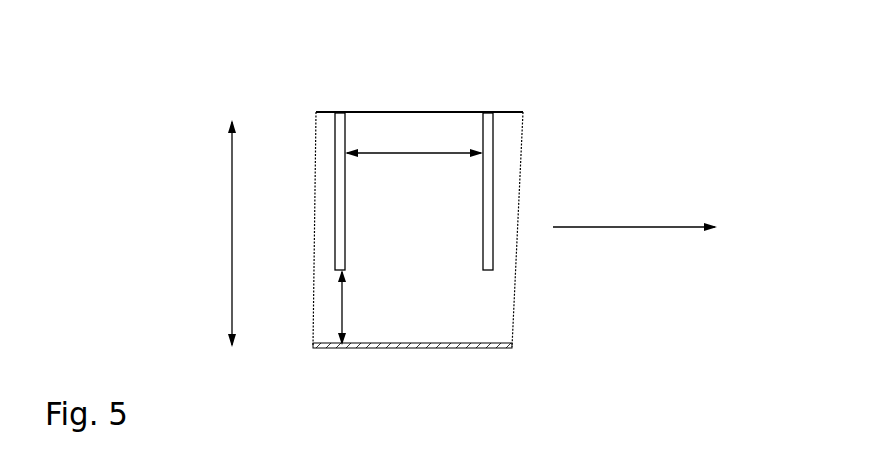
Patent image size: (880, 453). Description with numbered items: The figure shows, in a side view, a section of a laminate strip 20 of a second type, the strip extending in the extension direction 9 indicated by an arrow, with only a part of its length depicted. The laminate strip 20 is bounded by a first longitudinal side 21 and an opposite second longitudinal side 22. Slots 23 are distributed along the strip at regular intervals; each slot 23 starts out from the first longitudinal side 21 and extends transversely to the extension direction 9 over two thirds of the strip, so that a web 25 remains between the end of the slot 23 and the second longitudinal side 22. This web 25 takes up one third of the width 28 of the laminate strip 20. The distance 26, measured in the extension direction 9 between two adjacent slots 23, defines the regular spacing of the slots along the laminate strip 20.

The extension direction 9 is at (656, 227).
The laminate strip 20 is at (594, 117).
The first longitudinal side 21 is at (417, 111).
The second longitudinal side 22 is at (418, 348).
The slots 23 is at (342, 112).
The web 25 is at (342, 300).
The distance 26 is at (423, 154).
The width 28 is at (232, 207).